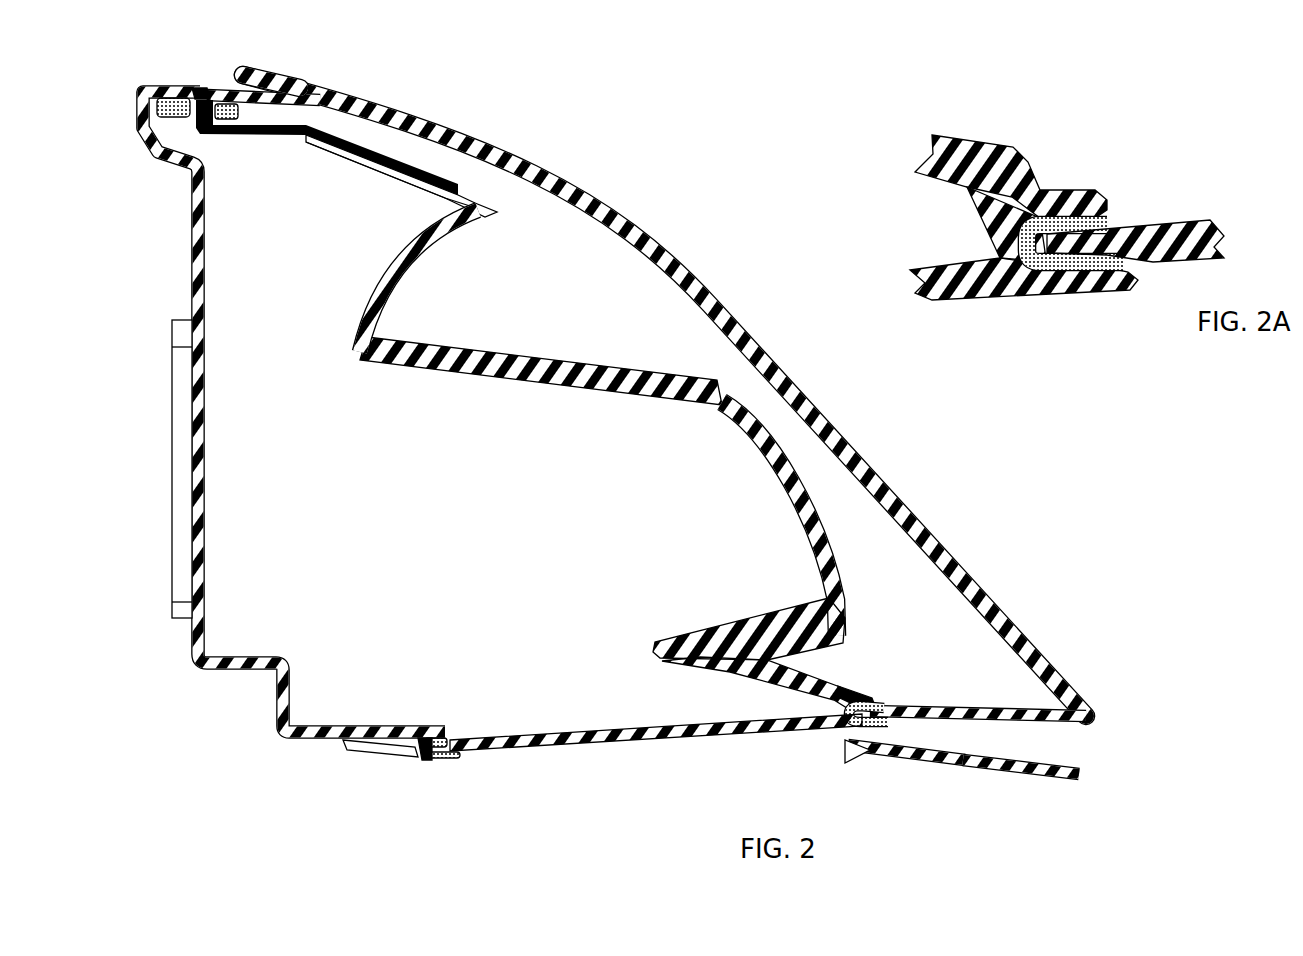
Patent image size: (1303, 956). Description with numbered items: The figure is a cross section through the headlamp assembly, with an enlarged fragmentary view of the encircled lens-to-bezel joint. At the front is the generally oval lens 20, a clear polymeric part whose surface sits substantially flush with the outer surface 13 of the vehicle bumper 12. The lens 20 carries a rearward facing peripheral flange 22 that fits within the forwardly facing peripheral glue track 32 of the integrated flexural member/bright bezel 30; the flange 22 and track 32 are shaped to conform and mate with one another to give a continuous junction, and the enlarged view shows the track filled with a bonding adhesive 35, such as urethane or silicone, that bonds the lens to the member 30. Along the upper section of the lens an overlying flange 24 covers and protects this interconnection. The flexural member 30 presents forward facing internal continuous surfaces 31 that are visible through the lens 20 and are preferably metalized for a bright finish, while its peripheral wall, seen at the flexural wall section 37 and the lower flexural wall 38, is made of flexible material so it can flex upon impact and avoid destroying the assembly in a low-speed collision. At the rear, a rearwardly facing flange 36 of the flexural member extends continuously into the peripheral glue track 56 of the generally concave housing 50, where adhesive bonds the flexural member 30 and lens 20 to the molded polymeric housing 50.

In FIG. 2, the bumper 12 is at (1062, 781).
In FIG. 2, the outer surface 13 is at (1037, 762).
In FIG. 2, the lens 20 is at (957, 548).
In FIG. 2, the peripheral flange 22 is at (267, 100).
In FIG. 2A, the peripheral flange 22 is at (1057, 193).
In FIG. 2, the overlying flange 24 is at (250, 68).
In FIG. 2, the integrated flexural member/bright bezel 30 is at (450, 380).
In FIG. 2, the internal continuous surfaces 31 is at (410, 163).
In FIG. 2, the peripheral glue track 32 is at (247, 120).
In FIG. 2A, the peripheral glue track 32 is at (1080, 193).
In FIG. 2A, the bonding adhesive 35 is at (1103, 227).
In FIG. 2, the rearwardly facing flange 36 is at (180, 127).
In FIG. 2, the flexural wall section 37 is at (330, 160).
In FIG. 2, the lower flexural wall 38 is at (640, 745).
In FIG. 2, the housing 50 is at (233, 673).
In FIG. 2, the peripheral glue track 56 is at (185, 88).